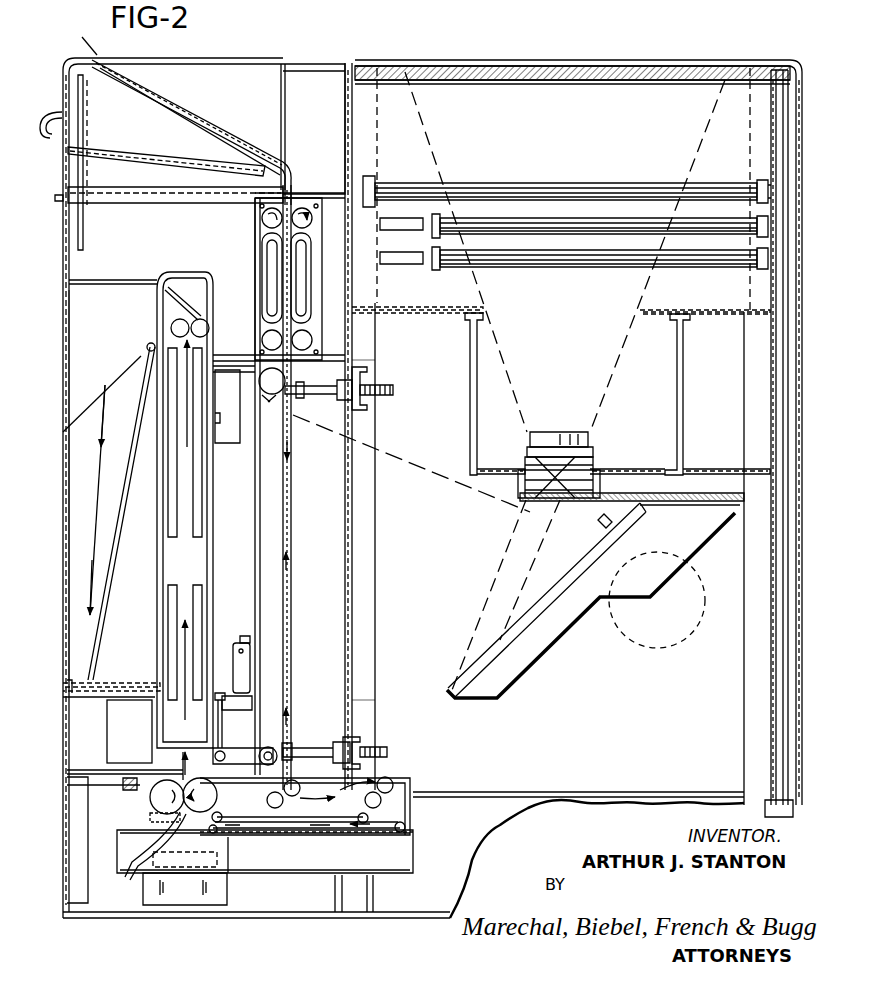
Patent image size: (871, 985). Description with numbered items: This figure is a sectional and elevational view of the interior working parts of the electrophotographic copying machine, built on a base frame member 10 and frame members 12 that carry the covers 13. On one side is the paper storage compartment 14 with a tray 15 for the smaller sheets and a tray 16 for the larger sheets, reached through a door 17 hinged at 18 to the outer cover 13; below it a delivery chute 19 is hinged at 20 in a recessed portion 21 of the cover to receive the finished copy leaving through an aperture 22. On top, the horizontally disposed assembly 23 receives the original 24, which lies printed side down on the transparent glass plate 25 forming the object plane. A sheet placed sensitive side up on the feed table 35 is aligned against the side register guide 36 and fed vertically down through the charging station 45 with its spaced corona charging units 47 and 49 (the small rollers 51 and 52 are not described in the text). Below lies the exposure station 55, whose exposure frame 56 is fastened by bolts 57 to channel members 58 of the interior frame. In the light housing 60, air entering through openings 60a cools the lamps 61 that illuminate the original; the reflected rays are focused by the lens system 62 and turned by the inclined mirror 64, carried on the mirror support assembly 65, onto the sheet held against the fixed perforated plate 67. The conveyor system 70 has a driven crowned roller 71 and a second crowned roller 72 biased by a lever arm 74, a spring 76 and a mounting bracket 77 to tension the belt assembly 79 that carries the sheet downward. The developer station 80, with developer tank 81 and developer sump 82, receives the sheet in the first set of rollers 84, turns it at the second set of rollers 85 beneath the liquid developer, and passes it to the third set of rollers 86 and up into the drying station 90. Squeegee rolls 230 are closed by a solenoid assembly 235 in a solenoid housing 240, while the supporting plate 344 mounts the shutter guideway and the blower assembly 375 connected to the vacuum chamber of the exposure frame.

The base frame member 10 is at (328, 919).
The frame members 12 is at (783, 173).
The covers 13 is at (62, 88).
The paper storage compartment 14 is at (85, 127).
The tray 15 is at (137, 152).
The tray 16 is at (142, 188).
The door 17 is at (62, 168).
The hinge 18 is at (57, 200).
The delivery chute 19 is at (92, 488).
The hinge 20 is at (118, 360).
The recessed portion 21 is at (83, 383).
The aperture 22 is at (160, 312).
The original-receiving assembly 23 is at (684, 62).
The original 24 is at (510, 66).
The transparent glass plate 25 is at (537, 84).
The feed table 35 is at (184, 108).
The side register guide 36 is at (193, 108).
The charging station 45 is at (256, 265).
The corona charging unit 47 is at (268, 287).
The corona charging unit 49 is at (304, 298).
The upper rollers 51 is at (261, 217).
The lower rollers 52 is at (258, 340).
The exposure station 55 is at (324, 563).
The exposure frame 56 is at (248, 547).
The bolts 57 is at (381, 398).
The channel members 58 is at (364, 377).
The light housing 60 is at (568, 318).
The openings 60a is at (440, 258).
The lamps 61 is at (628, 228).
The lens system 62 is at (592, 447).
The inclined mirror 64 is at (565, 579).
The mirror support assembly 65 is at (568, 632).
The fixed perforated plate 67 is at (291, 465).
The conveyor system 70 is at (266, 402).
The crowned roller 71 is at (261, 383).
The crowned roller 72 is at (288, 793).
The lever arm 74 is at (246, 755).
The spring 76 is at (240, 700).
The mounting bracket 77 is at (253, 670).
The belt assembly 79 is at (257, 592).
The developer station 80 is at (282, 833).
The developer tank 81 is at (412, 808).
The developer sump 82 is at (412, 857).
The first set of rollers 84 is at (288, 806).
The second set of rollers 85 is at (394, 795).
The third set of rollers 86 is at (126, 877).
The drying station 90 is at (176, 563).
The squeegee rolls 230 is at (148, 806).
The solenoid assembly 235 is at (108, 725).
The solenoid housing 240 is at (124, 688).
The supporting plate 344 is at (680, 496).
The blower assembly 375 is at (661, 649).